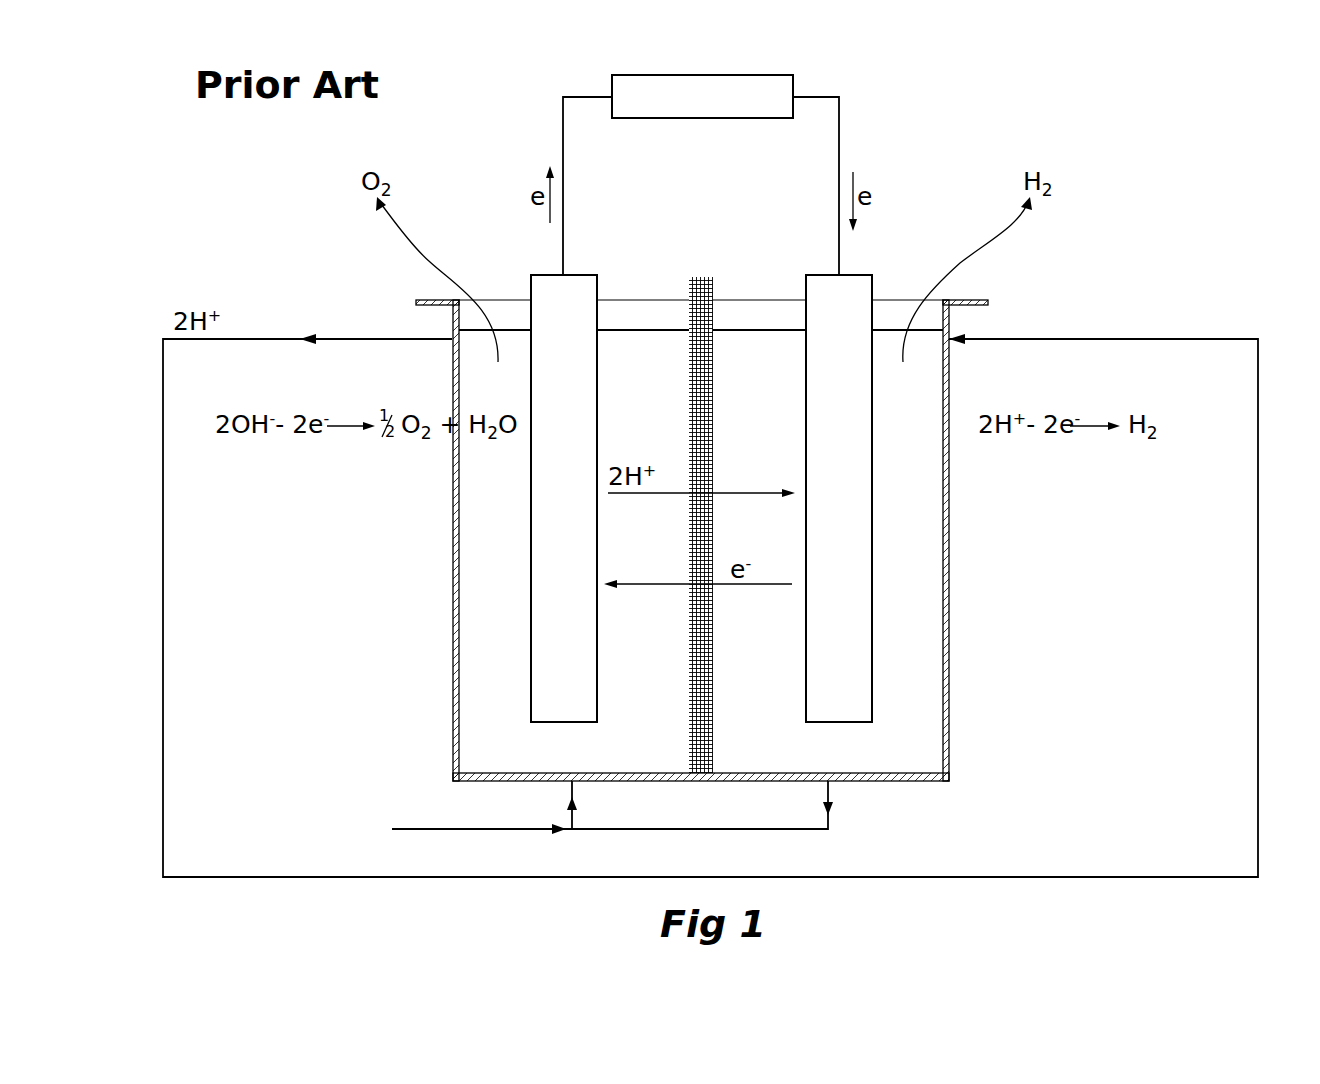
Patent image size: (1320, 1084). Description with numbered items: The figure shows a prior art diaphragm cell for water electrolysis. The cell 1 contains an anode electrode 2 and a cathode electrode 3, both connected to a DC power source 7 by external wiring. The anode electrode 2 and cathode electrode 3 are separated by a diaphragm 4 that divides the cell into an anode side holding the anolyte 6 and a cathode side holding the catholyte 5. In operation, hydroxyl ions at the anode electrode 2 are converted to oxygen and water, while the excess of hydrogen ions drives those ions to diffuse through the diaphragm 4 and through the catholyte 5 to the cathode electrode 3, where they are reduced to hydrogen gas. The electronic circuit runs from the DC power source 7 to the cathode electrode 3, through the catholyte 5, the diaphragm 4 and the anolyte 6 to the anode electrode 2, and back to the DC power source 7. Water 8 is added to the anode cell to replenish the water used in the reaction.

The cell 1 is at (951, 567).
The anode electrode 2 is at (528, 290).
The cathode electrode 3 is at (875, 285).
The diaphragm 4 is at (690, 315).
The catholyte 5 is at (900, 683).
The anolyte 6 is at (497, 683).
The DC power source 7 is at (740, 118).
The water 8 is at (423, 829).